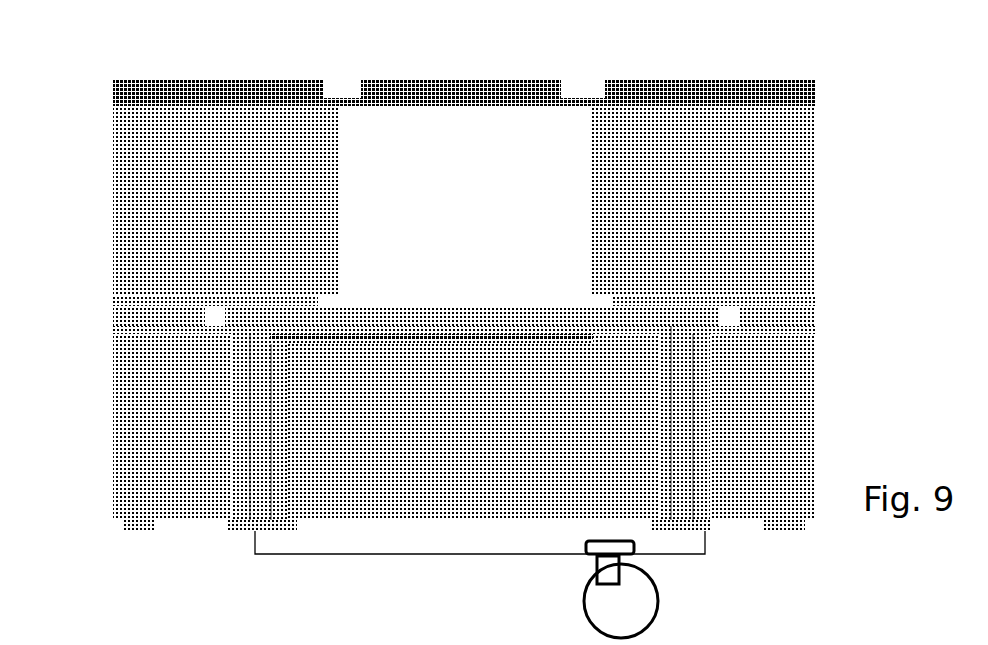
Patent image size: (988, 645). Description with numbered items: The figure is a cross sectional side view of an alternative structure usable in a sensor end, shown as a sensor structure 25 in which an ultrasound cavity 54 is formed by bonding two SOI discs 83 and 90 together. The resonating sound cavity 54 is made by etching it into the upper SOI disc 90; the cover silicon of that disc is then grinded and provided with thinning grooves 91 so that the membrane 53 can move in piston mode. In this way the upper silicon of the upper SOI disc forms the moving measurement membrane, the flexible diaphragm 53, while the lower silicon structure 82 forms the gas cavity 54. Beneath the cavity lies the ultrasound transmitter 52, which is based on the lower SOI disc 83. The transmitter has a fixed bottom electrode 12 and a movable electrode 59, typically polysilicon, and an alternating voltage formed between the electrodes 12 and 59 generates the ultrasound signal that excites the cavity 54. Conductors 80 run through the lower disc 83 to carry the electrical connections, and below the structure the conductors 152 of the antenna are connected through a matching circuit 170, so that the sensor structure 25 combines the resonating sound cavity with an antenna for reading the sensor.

The sensor structure 25 is at (101, 48).
The flexible diaphragm 53 is at (448, 72).
The thinning grooves 91 is at (333, 73).
The disc 90 is at (105, 162).
The silicon structure 82 is at (806, 168).
The resonating sound cavity 54 is at (558, 144).
The movable electrode of the ultrasound transmitter 59 is at (500, 297).
The SOI disc 83 is at (105, 375).
The ultrasound transmitter 52 is at (512, 323).
The fixed electrode 12 is at (377, 338).
The conductors 80 is at (263, 418).
The conductors of the antenna 152 is at (323, 546).
The matching circuit 170 is at (592, 532).